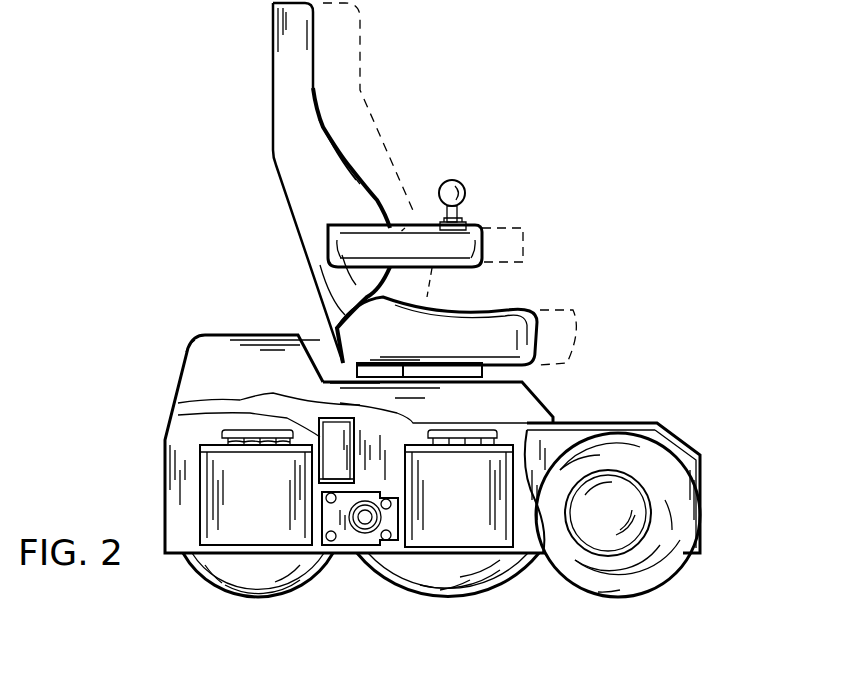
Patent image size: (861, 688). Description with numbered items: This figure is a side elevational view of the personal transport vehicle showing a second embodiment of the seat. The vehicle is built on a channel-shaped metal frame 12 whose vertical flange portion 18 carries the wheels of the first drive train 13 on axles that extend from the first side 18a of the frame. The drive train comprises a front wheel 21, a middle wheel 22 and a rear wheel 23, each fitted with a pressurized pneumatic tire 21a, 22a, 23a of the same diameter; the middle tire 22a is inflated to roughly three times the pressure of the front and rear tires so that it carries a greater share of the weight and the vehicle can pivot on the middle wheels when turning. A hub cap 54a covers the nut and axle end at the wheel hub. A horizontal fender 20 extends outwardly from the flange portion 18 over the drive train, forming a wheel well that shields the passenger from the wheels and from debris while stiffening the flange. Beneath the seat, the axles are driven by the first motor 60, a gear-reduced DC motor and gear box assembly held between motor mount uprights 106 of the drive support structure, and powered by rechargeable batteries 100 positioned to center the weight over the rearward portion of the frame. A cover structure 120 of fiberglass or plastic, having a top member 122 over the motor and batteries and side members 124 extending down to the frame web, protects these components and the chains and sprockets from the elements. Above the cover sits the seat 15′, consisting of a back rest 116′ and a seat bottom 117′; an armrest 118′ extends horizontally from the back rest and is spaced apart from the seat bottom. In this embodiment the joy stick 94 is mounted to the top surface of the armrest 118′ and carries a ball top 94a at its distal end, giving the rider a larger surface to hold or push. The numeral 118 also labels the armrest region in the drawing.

The frame 12 is at (698, 424).
The first drive train 13 is at (722, 527).
The seat 15′ is at (372, 146).
The flange portion 18 is at (700, 458).
The first side of frame 18a is at (589, 5).
The fender 20 is at (627, 422).
The front wheel 21 is at (578, 606).
The tire 21a is at (608, 583).
The middle wheel 22 is at (430, 598).
The tire 22a is at (460, 577).
The rear wheel 23 is at (186, 576).
The tire 23a is at (222, 588).
The hub cap 54a is at (613, 518).
The first motor 60 is at (330, 442).
The joy stick 94 is at (526, 184).
The ball top 94a is at (463, 185).
The battery 100 is at (228, 500).
The motor mount upright 106 is at (350, 540).
The back rest 116′ is at (287, 88).
The seat bottom 117′ is at (505, 335).
The armrest 118 is at (467, 236).
The armrest 118′ is at (403, 230).
The cover structure 120 is at (200, 328).
The top member 122 is at (277, 335).
The side member 124 is at (202, 358).